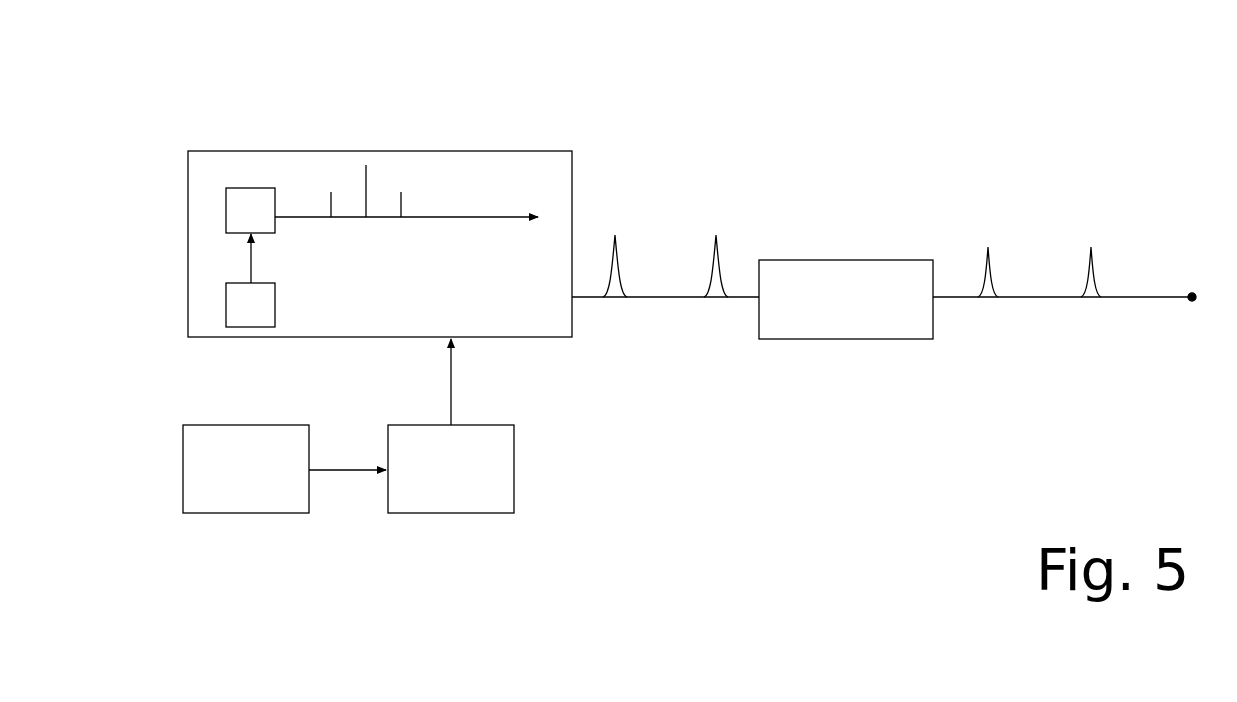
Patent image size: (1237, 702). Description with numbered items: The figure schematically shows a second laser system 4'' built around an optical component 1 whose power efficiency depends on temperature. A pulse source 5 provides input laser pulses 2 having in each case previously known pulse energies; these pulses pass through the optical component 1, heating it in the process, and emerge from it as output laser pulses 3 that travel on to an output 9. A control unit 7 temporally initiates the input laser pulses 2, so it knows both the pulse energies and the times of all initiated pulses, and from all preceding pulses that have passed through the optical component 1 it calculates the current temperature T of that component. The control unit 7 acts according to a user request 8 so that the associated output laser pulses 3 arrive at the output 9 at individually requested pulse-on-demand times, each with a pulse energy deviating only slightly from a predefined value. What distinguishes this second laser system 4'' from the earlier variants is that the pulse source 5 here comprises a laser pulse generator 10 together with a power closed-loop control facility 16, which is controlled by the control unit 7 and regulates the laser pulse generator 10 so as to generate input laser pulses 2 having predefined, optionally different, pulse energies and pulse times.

The optical component 1 is at (820, 309).
The input laser pulses 2 is at (332, 212).
The output laser pulses 3 is at (988, 247).
The second laser system 4'' is at (857, 90).
The pulse source 5 is at (540, 324).
The control unit 7 is at (463, 482).
The user request 8 is at (257, 482).
The output 9 is at (1194, 292).
The laser pulse generator 10 is at (232, 222).
The power closed-loop control facility 16 is at (232, 320).